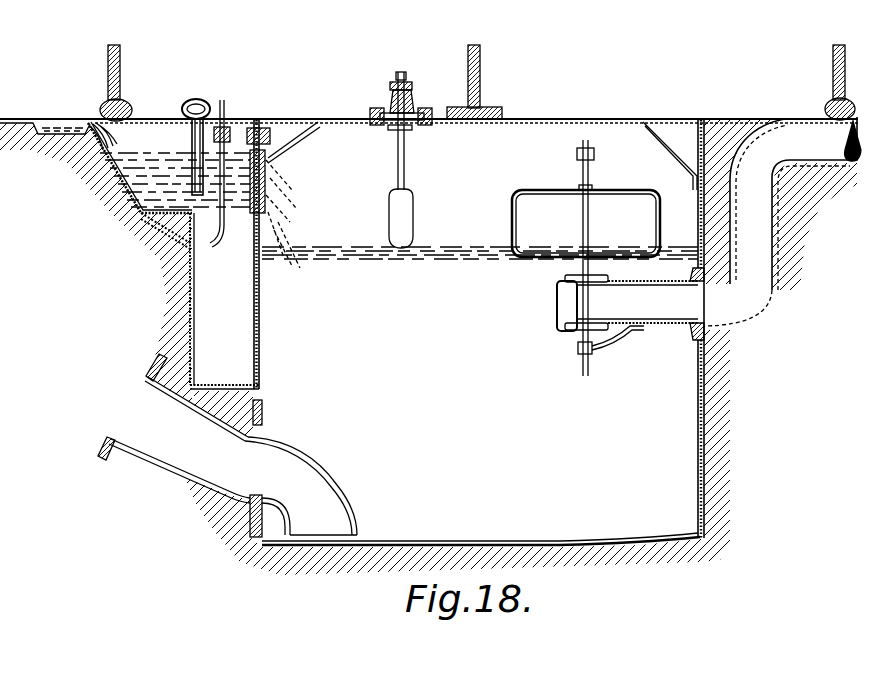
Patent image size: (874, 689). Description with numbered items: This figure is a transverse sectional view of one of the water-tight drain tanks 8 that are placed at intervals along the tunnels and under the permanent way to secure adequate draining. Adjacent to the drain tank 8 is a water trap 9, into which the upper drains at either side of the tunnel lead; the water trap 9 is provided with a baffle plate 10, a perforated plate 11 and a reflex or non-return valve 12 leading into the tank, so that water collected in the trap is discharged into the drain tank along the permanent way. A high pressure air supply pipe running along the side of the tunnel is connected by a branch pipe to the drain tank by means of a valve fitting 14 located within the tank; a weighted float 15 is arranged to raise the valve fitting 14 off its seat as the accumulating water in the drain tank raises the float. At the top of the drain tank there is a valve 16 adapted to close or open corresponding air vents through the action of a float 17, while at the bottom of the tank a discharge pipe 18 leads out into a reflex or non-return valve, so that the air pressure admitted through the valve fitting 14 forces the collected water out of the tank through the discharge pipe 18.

The drain tank 8 is at (682, 402).
The water trap 9 is at (157, 143).
The baffle plate 10 is at (228, 160).
The perforated plate 11 is at (202, 133).
The reflex or non-return valve 12 is at (268, 206).
The valve fitting 14 is at (583, 300).
The weighted float 15 is at (527, 188).
The valve 16 is at (404, 96).
The float 17 is at (403, 216).
The discharge pipe 18 is at (337, 500).